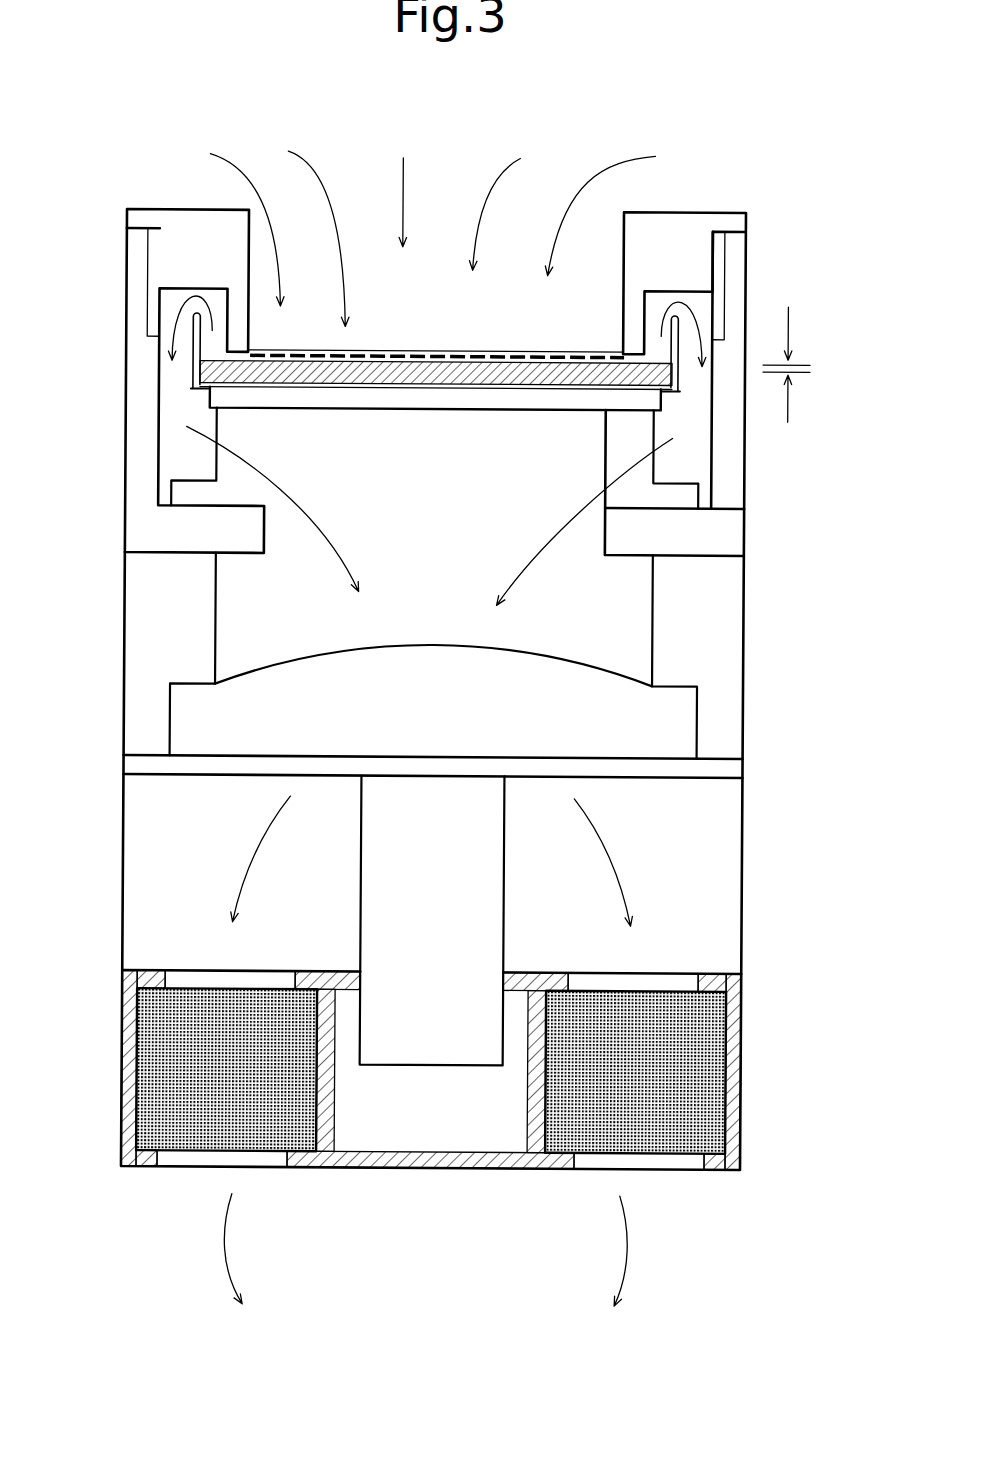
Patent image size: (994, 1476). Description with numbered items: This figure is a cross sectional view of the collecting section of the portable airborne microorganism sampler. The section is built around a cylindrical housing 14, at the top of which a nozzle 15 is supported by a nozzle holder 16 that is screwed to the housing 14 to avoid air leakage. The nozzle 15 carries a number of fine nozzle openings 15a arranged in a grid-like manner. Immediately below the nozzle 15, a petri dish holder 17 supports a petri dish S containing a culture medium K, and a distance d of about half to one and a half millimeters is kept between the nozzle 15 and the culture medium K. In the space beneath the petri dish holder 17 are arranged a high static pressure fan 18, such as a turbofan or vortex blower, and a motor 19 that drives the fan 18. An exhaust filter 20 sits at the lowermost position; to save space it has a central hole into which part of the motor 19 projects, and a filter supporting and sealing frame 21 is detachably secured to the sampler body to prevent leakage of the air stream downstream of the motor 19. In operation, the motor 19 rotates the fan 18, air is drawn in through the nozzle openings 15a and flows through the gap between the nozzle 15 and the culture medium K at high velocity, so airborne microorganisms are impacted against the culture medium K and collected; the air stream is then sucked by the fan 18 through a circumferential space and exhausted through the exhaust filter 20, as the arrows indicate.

The cylindrical housing 14 is at (736, 592).
The nozzle 15 is at (491, 350).
The nozzle openings 15a is at (381, 347).
The nozzle holder 16 is at (689, 238).
The petri dish holder 17 is at (248, 453).
The high static pressure fan 18 is at (675, 727).
The motor 19 is at (400, 1032).
The exhaust filter 20 is at (686, 1102).
The filter supporting and sealing frame 21 is at (501, 1173).
The culture medium K is at (198, 375).
The petri dish S is at (201, 393).
The distance d is at (800, 364).